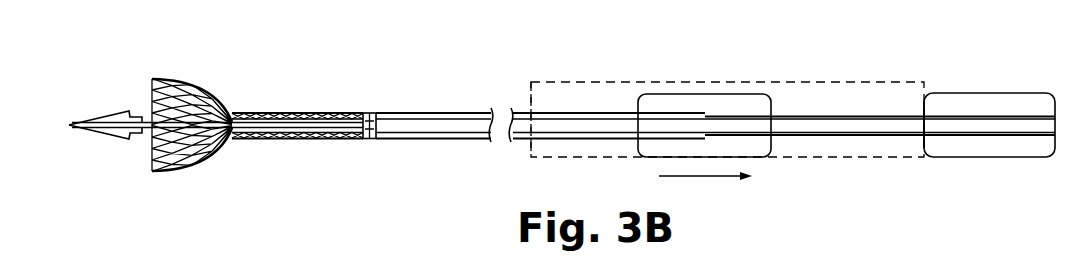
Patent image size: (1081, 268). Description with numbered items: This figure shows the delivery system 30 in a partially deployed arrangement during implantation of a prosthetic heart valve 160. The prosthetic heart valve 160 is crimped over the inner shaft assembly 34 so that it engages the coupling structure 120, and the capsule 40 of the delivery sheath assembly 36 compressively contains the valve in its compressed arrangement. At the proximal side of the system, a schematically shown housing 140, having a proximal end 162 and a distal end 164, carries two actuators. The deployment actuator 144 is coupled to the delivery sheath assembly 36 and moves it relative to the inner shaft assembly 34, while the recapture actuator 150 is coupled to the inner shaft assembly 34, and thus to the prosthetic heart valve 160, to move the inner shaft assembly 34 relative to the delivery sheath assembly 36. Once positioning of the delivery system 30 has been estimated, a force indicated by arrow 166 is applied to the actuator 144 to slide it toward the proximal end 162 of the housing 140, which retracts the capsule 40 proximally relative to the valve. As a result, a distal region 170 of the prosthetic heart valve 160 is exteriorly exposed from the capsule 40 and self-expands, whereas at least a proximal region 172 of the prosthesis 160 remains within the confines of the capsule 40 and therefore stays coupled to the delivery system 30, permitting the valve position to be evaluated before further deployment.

The delivery system 30 is at (671, 50).
The inner shaft assembly 34 is at (455, 152).
The delivery sheath assembly 36 is at (407, 100).
The capsule 40 is at (266, 152).
The coupling structure 120 is at (370, 139).
The housing 140 is at (587, 82).
The deployment actuator 144 is at (719, 93).
The recapture actuator 150 is at (1010, 92).
The prosthetic heart valve 160 is at (199, 72).
The proximal end 162 is at (925, 92).
The distal end 164 is at (531, 91).
The arrow 166 is at (698, 178).
The distal region 170 is at (203, 168).
The proximal region 172 is at (308, 139).